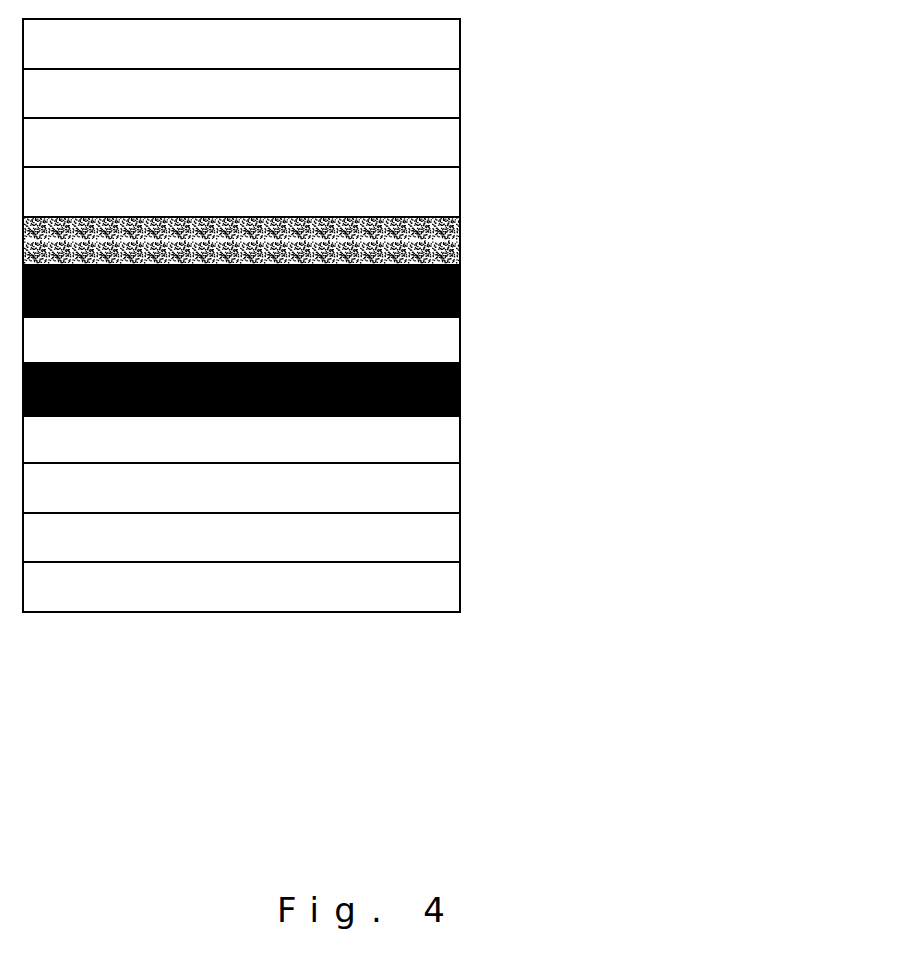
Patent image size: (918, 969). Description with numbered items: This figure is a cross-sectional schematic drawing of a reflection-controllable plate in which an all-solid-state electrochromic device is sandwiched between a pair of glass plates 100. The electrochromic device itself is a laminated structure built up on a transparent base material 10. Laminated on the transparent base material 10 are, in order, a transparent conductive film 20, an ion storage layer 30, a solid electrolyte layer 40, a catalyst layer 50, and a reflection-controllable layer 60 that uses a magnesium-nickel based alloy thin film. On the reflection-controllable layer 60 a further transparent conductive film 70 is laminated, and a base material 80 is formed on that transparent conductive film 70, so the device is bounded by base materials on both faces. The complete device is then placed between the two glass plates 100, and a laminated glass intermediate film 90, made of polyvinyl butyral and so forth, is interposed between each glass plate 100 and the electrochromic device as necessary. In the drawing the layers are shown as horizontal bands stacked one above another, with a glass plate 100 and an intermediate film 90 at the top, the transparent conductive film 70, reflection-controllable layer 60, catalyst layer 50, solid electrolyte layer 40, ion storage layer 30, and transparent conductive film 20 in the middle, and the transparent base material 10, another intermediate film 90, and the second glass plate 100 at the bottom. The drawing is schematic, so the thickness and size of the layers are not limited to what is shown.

The glass plates 100 is at (293, 315).
The laminated glass intermediate film 90 is at (399, 315).
The base material 80 is at (404, 142).
The transparent conductive film 70 is at (415, 192).
The reflection-controllable layer 60 is at (418, 241).
The catalyst layer 50 is at (342, 291).
The solid electrolyte layer 40 is at (392, 340).
The ion storage layer 30 is at (359, 389).
The transparent conductive film 20 is at (415, 439).
The transparent base material 10 is at (404, 488).